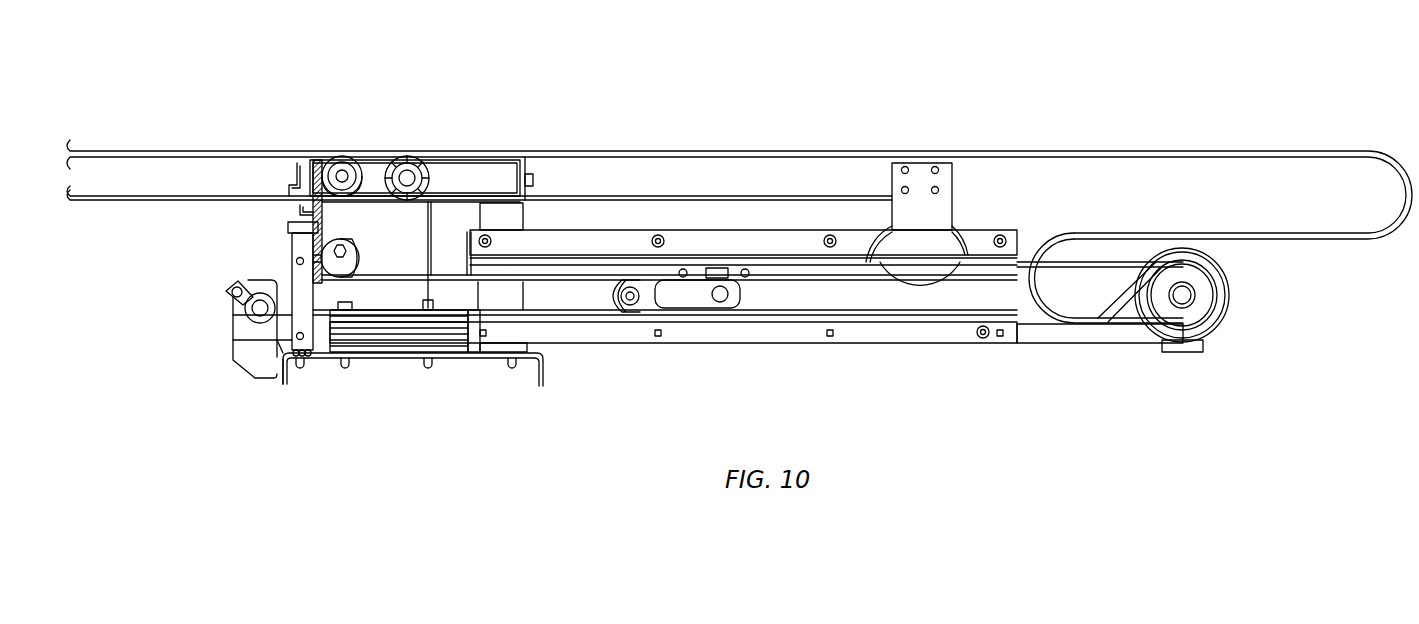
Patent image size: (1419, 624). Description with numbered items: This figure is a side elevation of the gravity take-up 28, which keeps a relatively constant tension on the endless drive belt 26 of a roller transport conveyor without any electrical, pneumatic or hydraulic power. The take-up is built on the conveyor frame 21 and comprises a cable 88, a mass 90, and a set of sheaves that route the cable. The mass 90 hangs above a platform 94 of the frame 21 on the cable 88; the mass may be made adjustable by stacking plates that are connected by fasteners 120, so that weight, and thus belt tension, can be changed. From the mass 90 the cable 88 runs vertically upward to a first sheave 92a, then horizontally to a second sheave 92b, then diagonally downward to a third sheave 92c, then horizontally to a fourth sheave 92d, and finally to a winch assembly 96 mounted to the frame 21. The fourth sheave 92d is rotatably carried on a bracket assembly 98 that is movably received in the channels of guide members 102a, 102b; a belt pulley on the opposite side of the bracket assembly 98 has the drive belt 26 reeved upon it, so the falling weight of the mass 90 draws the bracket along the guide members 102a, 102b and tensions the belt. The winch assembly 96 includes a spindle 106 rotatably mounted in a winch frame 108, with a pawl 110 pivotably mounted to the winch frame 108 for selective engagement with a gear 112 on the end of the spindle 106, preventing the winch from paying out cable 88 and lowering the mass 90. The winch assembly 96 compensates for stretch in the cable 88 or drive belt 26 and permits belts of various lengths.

The gravity take-up 28 is at (748, 86).
The endless drive belt 26 is at (686, 148).
The frame 21 is at (486, 422).
The first sheave 92a is at (412, 166).
The second sheave 92b is at (337, 158).
The third sheave 92c is at (358, 262).
The fourth sheave 92d is at (620, 302).
The cable 88 is at (431, 236).
The mass 90 is at (476, 312).
The platform 94 is at (468, 360).
The winch assembly 96 is at (182, 299).
The bracket assembly 98 is at (684, 334).
The guide member 102a is at (976, 258).
The guide member 102b is at (868, 330).
The spindle 106 is at (259, 313).
The winch frame 108 is at (268, 282).
The pawl 110 is at (232, 288).
The gear 112 is at (246, 307).
The fasteners 120 is at (350, 307).